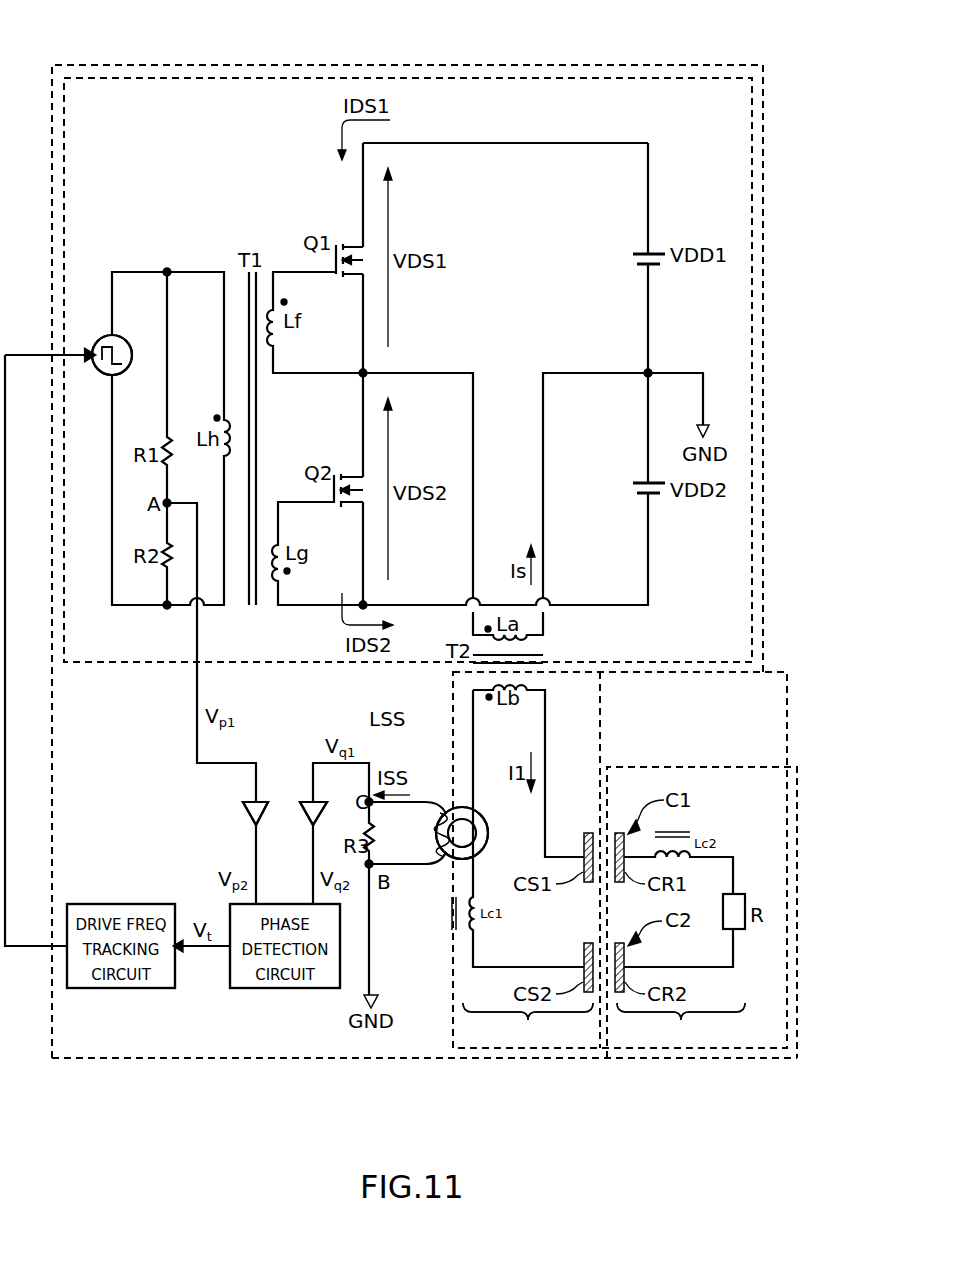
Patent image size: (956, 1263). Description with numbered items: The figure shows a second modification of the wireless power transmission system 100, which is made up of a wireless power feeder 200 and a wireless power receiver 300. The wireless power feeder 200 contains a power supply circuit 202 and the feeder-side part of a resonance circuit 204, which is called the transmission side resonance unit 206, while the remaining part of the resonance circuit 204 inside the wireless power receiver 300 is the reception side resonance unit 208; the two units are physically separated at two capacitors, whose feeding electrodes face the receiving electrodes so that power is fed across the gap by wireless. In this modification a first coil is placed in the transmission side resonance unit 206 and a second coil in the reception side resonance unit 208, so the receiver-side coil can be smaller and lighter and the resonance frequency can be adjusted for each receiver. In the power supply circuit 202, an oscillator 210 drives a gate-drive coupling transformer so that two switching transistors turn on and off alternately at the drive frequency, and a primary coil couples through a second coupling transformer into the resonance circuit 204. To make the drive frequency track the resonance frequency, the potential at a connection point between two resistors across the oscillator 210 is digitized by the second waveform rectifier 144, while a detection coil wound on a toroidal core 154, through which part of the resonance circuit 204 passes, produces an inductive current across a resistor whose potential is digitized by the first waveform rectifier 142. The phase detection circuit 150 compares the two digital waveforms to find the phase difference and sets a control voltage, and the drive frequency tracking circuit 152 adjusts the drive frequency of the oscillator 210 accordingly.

The wireless power transmission system 100 is at (421, 1120).
The wireless power feeder 200 is at (408, 65).
The power supply circuit 202 is at (578, 78).
The resonance circuit 204 is at (782, 672).
The transmission side resonance unit 206 is at (528, 1024).
The reception side resonance unit 208 is at (681, 1024).
The oscillator 210 is at (122, 338).
The wireless power receiver 300 is at (700, 767).
The first waveform rectifier 142 is at (305, 800).
The second waveform rectifier 144 is at (243, 800).
The phase detection circuit 150 is at (284, 988).
The drive frequency tracking circuit 152 is at (122, 988).
The core 154 is at (440, 838).